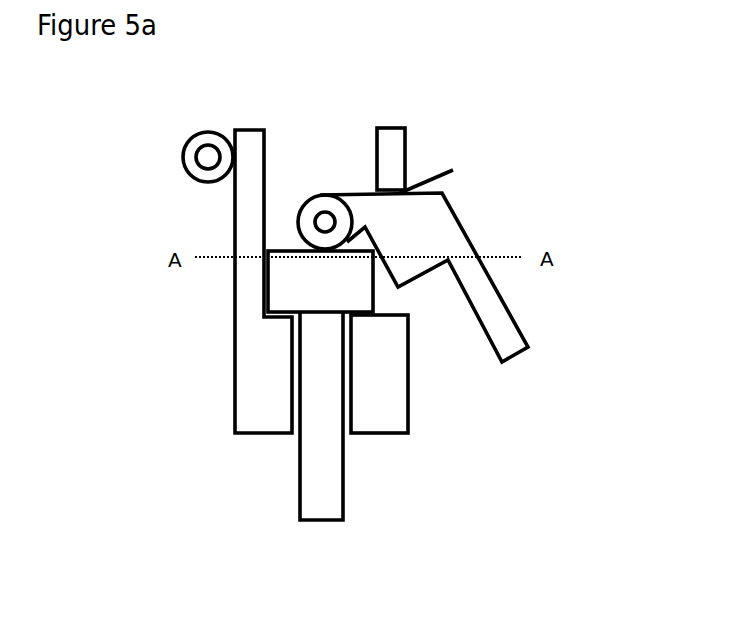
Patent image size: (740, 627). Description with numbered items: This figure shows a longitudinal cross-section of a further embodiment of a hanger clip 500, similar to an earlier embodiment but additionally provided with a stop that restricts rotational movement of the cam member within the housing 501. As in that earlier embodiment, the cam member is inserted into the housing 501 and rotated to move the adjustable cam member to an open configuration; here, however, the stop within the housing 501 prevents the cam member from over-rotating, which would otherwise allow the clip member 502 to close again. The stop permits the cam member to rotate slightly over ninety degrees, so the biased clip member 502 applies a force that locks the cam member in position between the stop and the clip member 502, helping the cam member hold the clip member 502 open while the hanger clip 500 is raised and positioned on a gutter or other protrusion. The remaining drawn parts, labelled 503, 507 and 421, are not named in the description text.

The hanger clip 500 is at (145, 235).
The housing 501 is at (267, 375).
The clip member 502 is at (500, 318).
The roller 503 is at (376, 262).
The roller 507 is at (192, 158).
The slider block 421 is at (350, 282).